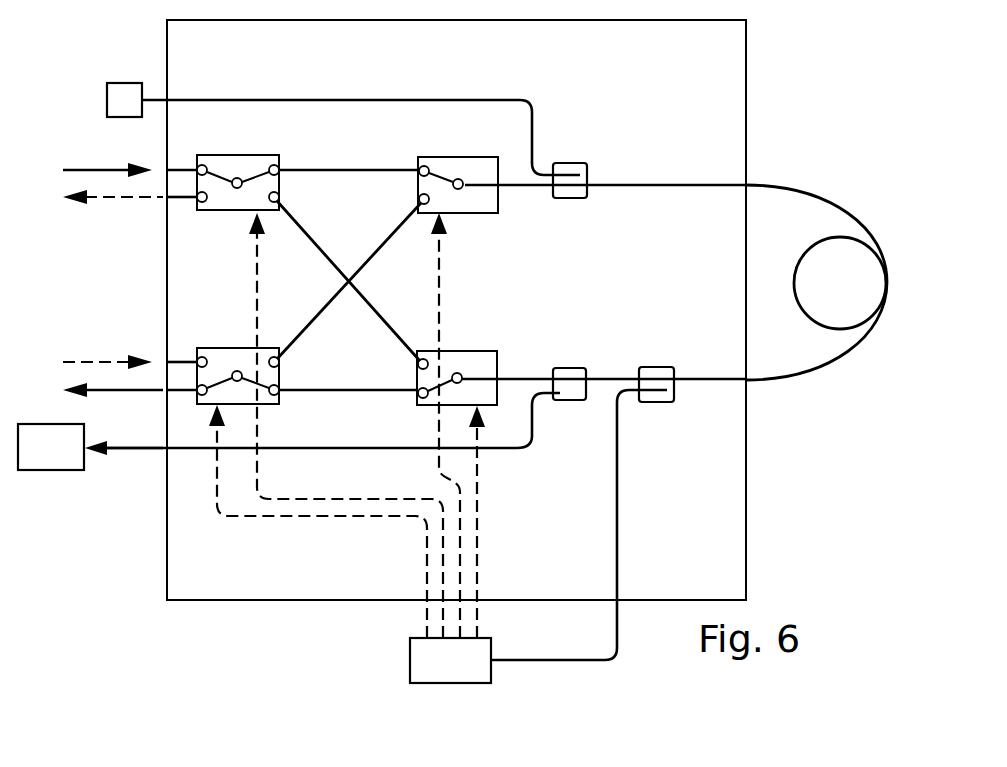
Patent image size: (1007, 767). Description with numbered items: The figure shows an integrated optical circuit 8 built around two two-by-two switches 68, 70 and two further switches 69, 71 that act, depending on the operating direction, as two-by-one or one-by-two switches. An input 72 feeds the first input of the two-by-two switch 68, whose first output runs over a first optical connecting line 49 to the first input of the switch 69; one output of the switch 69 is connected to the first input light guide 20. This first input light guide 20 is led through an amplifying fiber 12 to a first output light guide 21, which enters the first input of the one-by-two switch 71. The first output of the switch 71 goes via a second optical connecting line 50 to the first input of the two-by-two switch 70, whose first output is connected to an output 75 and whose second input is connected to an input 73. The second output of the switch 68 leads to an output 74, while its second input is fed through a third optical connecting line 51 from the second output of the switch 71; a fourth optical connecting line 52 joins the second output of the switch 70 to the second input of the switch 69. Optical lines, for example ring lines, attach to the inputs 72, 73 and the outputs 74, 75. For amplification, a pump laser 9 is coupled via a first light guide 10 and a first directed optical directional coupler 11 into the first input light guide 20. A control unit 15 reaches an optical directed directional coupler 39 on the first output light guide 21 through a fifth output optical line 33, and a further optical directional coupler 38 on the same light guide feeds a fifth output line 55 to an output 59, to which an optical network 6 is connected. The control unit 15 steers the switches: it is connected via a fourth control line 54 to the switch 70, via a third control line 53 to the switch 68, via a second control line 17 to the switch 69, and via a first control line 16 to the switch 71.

The optical network 6 is at (72, 470).
The integrated optical circuit 8 is at (760, 95).
The pump laser 9 is at (127, 83).
The first light guide 10 is at (376, 100).
The first directed optical directional coupler 11 is at (570, 163).
The amplifying fiber 12 is at (845, 226).
The control unit 15 is at (425, 655).
The first control line 16 is at (477, 472).
The second control line 17 is at (439, 473).
The first input light guide 20 is at (531, 188).
The first output light guide 21 is at (617, 378).
The fifth output optical line 33 is at (617, 530).
The optical directional coupler 38 is at (568, 368).
The optical directed directional coupler 39 is at (662, 367).
The first optical connecting line 49 is at (340, 170).
The second optical connecting line 50 is at (345, 390).
The third optical connecting line 51 is at (312, 226).
The fourth optical connecting line 52 is at (388, 235).
The third control line 53 is at (307, 495).
The fourth control line 54 is at (318, 518).
The fifth output line 55 is at (322, 447).
The output 59 is at (163, 452).
The two-by-two switch 68 is at (240, 155).
The two-by-one switch 69 is at (463, 157).
The two-by-two switch 70 is at (228, 348).
The one-by-two switch 71 is at (478, 351).
The input 72 is at (163, 168).
The input 73 is at (163, 360).
The output 74 is at (163, 200).
The output 75 is at (163, 392).